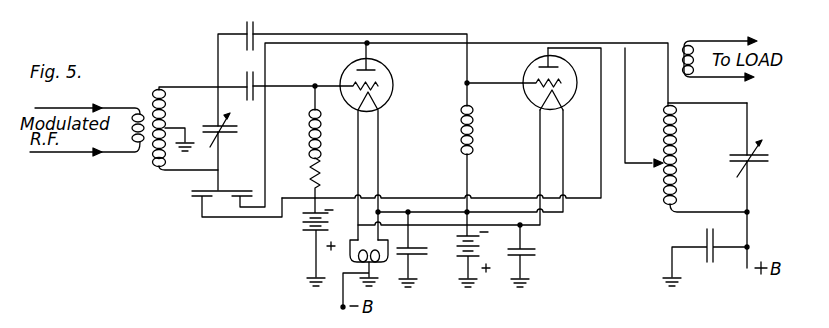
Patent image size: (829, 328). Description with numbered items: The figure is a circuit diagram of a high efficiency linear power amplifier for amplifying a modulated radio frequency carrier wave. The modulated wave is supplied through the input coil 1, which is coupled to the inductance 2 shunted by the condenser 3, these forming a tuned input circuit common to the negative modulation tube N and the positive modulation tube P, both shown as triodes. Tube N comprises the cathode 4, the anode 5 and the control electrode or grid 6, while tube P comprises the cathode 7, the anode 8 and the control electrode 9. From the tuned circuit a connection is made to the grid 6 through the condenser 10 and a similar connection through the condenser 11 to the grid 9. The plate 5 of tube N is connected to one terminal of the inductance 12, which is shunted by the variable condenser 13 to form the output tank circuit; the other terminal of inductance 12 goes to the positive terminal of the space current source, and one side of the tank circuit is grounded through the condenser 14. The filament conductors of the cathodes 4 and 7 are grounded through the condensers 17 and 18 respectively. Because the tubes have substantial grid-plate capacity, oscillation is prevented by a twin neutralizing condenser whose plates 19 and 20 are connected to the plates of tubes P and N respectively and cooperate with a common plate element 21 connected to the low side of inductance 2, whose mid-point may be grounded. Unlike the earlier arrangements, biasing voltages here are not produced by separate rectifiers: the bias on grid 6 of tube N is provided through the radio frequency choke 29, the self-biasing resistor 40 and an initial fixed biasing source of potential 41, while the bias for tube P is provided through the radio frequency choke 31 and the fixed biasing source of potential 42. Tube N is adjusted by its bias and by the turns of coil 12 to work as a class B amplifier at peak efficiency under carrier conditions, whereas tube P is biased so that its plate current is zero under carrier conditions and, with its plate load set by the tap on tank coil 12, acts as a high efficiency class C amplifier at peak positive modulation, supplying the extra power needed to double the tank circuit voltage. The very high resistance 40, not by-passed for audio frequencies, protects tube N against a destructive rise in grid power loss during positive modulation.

The input coil 1 is at (129, 130).
The inductance coil 2 is at (159, 88).
The condenser 3 is at (207, 125).
The cathode 4 is at (377, 107).
The anode 5 is at (383, 68).
The control electrode or grid 6 is at (385, 80).
The cathode 7 is at (562, 97).
The anode 8 is at (557, 68).
The control electrode 9 is at (548, 52).
The condenser 10 is at (258, 85).
The condenser 11 is at (257, 33).
The inductance 12 is at (663, 195).
The variable condenser 13 is at (760, 166).
The condenser 14 is at (711, 258).
The condenser 17 is at (414, 255).
The condenser 18 is at (531, 256).
The neutralizing condenser plate 19 is at (196, 203).
The neutralizing condenser plate 20 is at (239, 197).
The common cooperating plate element 21 is at (236, 190).
The radio frequency choke 29 is at (308, 126).
The radio frequency choke 31 is at (474, 134).
The self-biasing resistor 40 is at (310, 171).
The initial fixed biasing source of potential 41 is at (303, 228).
The fixed biasing source of potential 42 is at (458, 268).
The negative modulation tube N is at (393, 95).
The positive modulation tube P is at (522, 76).